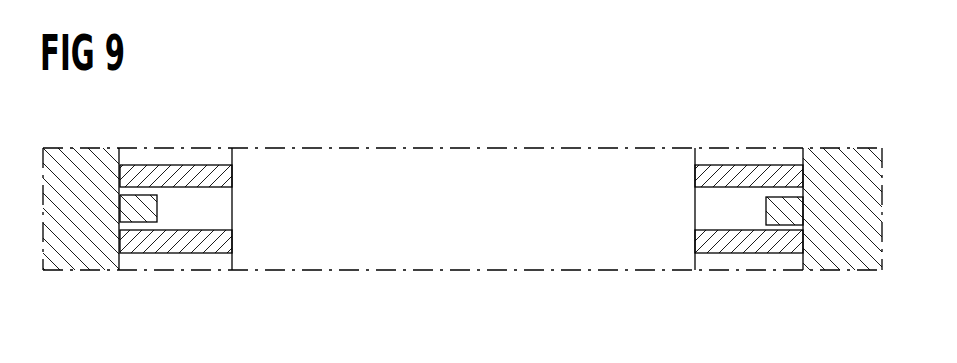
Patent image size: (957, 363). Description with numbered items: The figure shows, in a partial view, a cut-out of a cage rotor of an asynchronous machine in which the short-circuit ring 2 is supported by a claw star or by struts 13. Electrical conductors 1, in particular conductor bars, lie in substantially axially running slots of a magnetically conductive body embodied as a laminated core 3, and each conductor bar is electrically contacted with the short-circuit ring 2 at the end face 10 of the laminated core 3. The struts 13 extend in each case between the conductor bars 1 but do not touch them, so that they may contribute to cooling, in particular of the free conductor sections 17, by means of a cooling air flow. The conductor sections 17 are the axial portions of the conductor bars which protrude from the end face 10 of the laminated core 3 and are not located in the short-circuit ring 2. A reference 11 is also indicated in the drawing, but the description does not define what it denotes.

The electrical conductors 1 is at (735, 168).
The short-circuit ring 2 is at (836, 145).
The laminated core 3 is at (467, 263).
The end face 10 is at (232, 212).
The interface 11 is at (804, 207).
The struts 13 is at (780, 214).
The conductor sections 17 is at (185, 176).